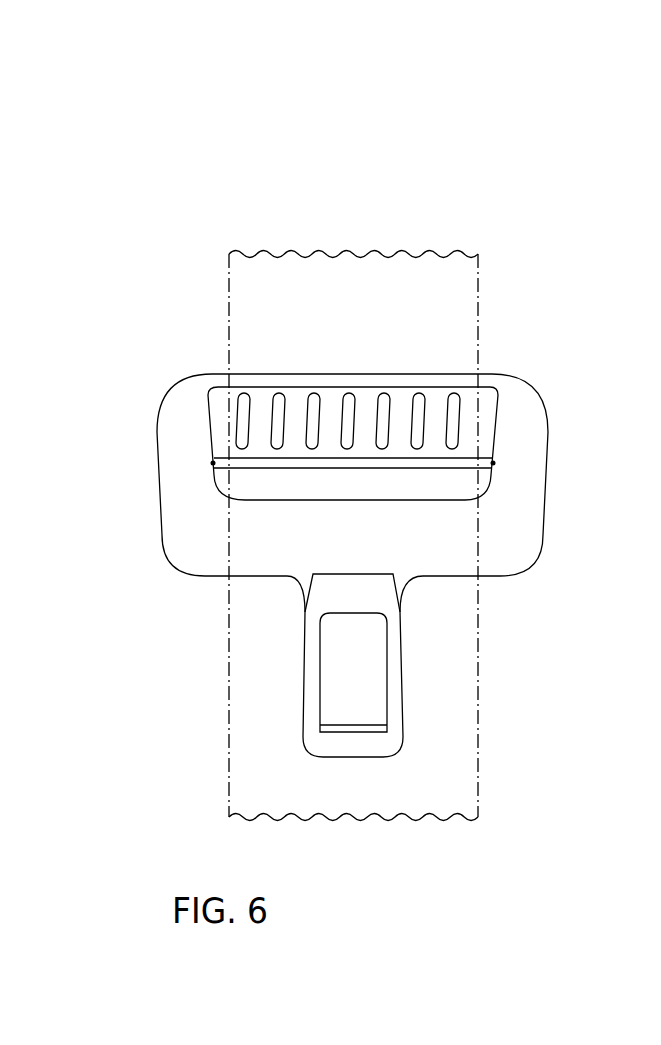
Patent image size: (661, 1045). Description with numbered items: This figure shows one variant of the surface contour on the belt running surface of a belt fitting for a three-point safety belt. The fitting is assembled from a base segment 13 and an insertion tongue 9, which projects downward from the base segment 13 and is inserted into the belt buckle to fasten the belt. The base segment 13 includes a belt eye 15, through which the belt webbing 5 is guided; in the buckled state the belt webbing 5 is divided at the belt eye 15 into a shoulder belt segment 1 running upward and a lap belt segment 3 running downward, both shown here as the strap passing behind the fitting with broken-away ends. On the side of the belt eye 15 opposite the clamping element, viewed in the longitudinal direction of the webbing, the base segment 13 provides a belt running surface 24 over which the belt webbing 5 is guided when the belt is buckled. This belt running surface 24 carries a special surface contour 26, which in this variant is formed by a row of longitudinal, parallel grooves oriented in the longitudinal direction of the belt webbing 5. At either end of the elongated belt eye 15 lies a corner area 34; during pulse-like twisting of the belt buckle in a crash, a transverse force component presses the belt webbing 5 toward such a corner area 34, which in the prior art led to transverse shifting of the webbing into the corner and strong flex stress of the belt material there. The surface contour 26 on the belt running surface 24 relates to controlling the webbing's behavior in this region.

The shoulder belt segment 1 is at (471, 337).
The lap belt segment 3 is at (478, 730).
The belt webbing 5 is at (360, 253).
The insertion tongue 9 is at (403, 675).
The base segment 13 is at (519, 418).
The belt eye 15 is at (398, 464).
The belt running surface 24 is at (365, 405).
The surface contour 26 is at (248, 403).
The corner area 34 is at (213, 463).